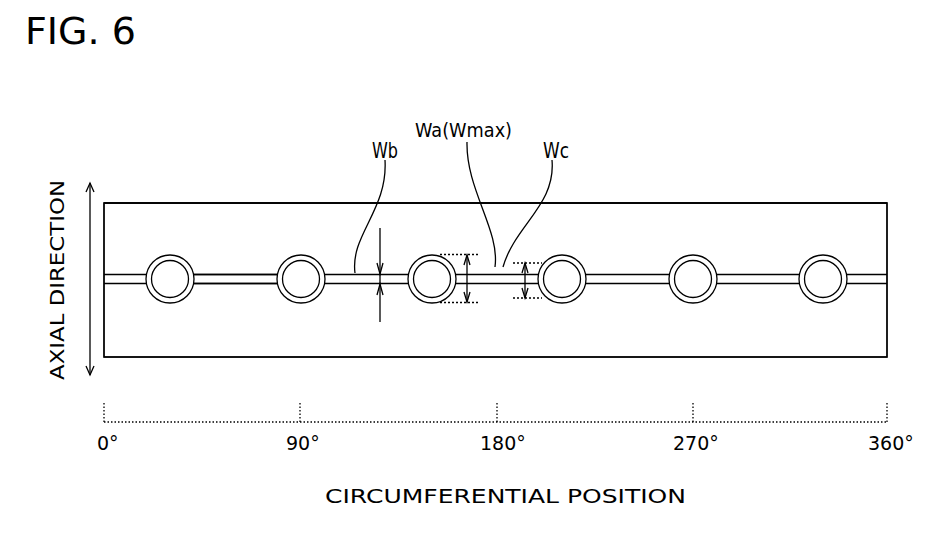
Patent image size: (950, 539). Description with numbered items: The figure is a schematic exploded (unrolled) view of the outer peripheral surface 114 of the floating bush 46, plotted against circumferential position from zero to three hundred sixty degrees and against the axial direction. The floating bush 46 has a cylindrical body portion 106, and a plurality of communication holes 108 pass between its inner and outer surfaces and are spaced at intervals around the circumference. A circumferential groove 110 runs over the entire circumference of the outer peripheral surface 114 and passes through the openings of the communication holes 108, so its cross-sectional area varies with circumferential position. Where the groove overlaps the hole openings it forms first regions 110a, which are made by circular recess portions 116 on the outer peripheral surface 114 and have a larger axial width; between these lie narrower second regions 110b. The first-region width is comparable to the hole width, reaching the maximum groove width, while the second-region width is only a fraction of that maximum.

The floating bush 46 is at (800, 167).
The body portion 106 is at (748, 202).
The communication holes 108 is at (563, 275).
The circumferential groove 110 is at (628, 270).
The first regions 110a is at (302, 254).
The second regions 110b is at (203, 272).
The outer peripheral surface 114 is at (693, 230).
The recess portions 116 is at (165, 254).